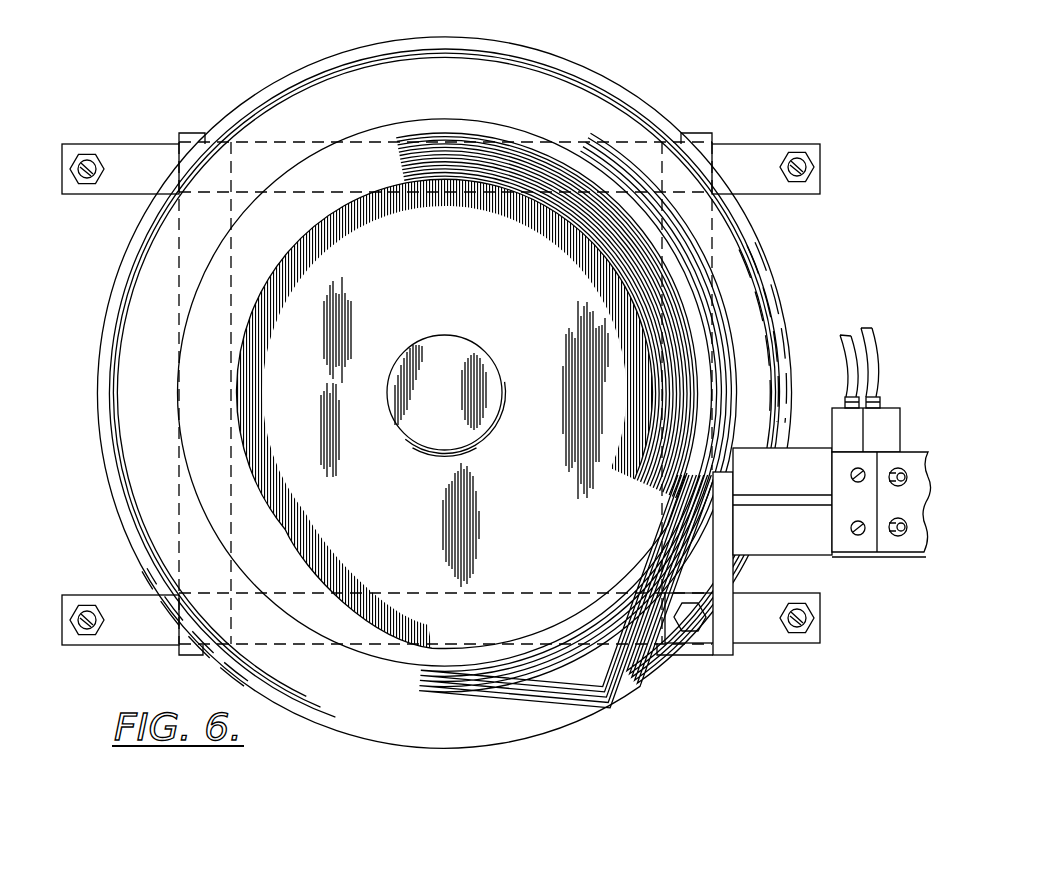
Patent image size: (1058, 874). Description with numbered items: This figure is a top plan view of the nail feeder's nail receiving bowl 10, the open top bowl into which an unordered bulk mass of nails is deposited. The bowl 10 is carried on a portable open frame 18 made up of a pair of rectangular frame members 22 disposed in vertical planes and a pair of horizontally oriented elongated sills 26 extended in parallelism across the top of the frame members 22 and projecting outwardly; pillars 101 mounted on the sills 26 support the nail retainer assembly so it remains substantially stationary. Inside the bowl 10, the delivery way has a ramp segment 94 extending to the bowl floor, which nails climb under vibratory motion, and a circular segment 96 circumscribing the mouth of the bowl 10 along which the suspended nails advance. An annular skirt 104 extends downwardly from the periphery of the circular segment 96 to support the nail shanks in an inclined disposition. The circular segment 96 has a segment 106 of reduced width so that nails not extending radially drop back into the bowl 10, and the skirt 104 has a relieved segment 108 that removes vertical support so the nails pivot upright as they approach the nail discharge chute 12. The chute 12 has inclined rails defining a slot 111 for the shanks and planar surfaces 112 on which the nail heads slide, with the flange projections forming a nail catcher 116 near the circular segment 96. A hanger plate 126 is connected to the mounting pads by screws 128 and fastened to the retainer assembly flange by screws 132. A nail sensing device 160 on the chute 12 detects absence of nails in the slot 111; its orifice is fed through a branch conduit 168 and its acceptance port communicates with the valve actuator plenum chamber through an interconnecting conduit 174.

The bowl 10 is at (459, 279).
The nail discharge chute 12 is at (910, 560).
The frame 18 is at (738, 134).
The frame members 22 is at (176, 280).
The sills 26 is at (153, 160).
The ramp segment 94 is at (642, 285).
The circular segment 96 is at (336, 174).
The pillars 101 is at (808, 160).
The annular skirt 104 is at (371, 68).
The segment of reduced width 106 is at (431, 648).
The relieved segment 108 is at (675, 567).
The slot 111 is at (742, 504).
The planar surface 112 is at (774, 536).
The nail catcher 116 is at (742, 522).
The hanger plate 126 is at (918, 470).
The screws 128 is at (896, 540).
The screws 132 is at (855, 522).
The nail sensing device 160 is at (897, 403).
The branch conduit 168 is at (872, 342).
The interconnecting conduit 174 is at (845, 334).